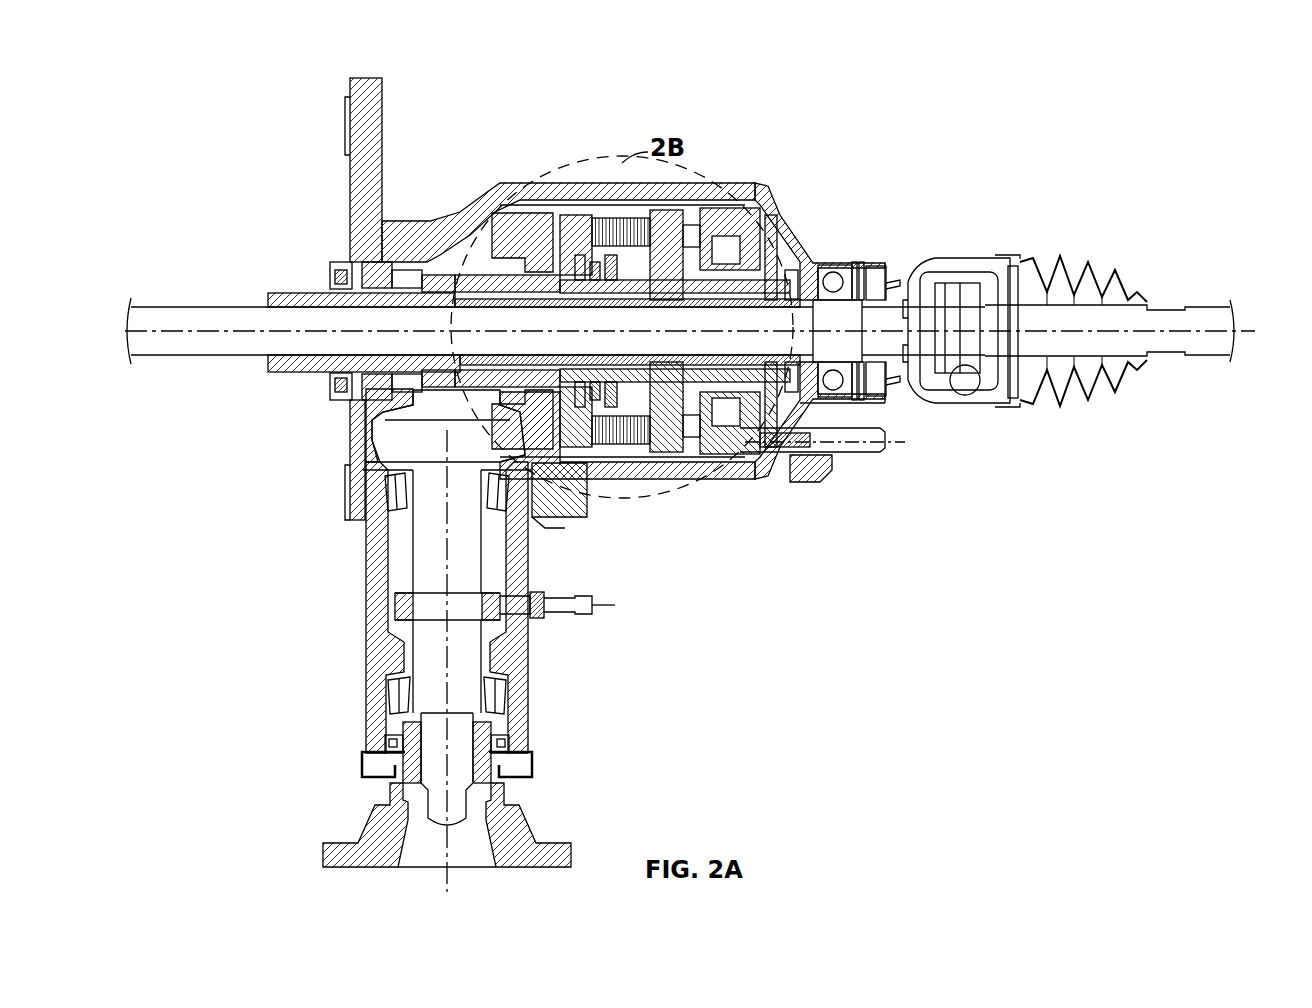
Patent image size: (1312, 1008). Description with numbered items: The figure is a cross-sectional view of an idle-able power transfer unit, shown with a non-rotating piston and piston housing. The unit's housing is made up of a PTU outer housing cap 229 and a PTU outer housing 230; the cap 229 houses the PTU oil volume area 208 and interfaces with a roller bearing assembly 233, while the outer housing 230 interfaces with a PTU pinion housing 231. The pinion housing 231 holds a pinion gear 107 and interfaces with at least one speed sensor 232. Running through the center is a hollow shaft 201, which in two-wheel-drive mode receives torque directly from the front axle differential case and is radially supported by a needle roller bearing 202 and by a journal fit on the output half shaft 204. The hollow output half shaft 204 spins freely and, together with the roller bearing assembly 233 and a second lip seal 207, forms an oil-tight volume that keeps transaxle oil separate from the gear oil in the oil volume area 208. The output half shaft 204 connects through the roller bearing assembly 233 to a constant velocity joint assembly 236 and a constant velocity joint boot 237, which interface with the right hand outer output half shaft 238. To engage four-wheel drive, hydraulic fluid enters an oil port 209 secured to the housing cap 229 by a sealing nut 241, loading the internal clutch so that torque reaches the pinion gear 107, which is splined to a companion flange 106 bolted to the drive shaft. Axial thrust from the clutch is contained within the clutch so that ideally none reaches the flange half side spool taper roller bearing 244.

The companion flange 106 is at (360, 823).
The pinion gear 107 is at (425, 655).
The hollow shaft 201 is at (300, 293).
The needle roller bearing 202 is at (440, 275).
The output half shaft 204 is at (225, 345).
The second lip seal 207 is at (350, 262).
The PTU oil volume area 208 is at (473, 235).
The oil port 209 is at (880, 448).
The PTU outer housing cap 229 is at (757, 183).
The PTU outer housing 230 is at (372, 80).
The PTU pinion housing 231 is at (530, 710).
The speed sensor 232 is at (558, 600).
The roller bearing assembly 233 is at (833, 268).
The constant velocity joint assembly 236 is at (1019, 248).
The constant velocity joint boot 237 is at (1085, 272).
The right hand outer output half shaft 238 is at (1215, 312).
The sealing nut 241 is at (823, 468).
The flange half side spool taper roller bearing 244 is at (372, 270).